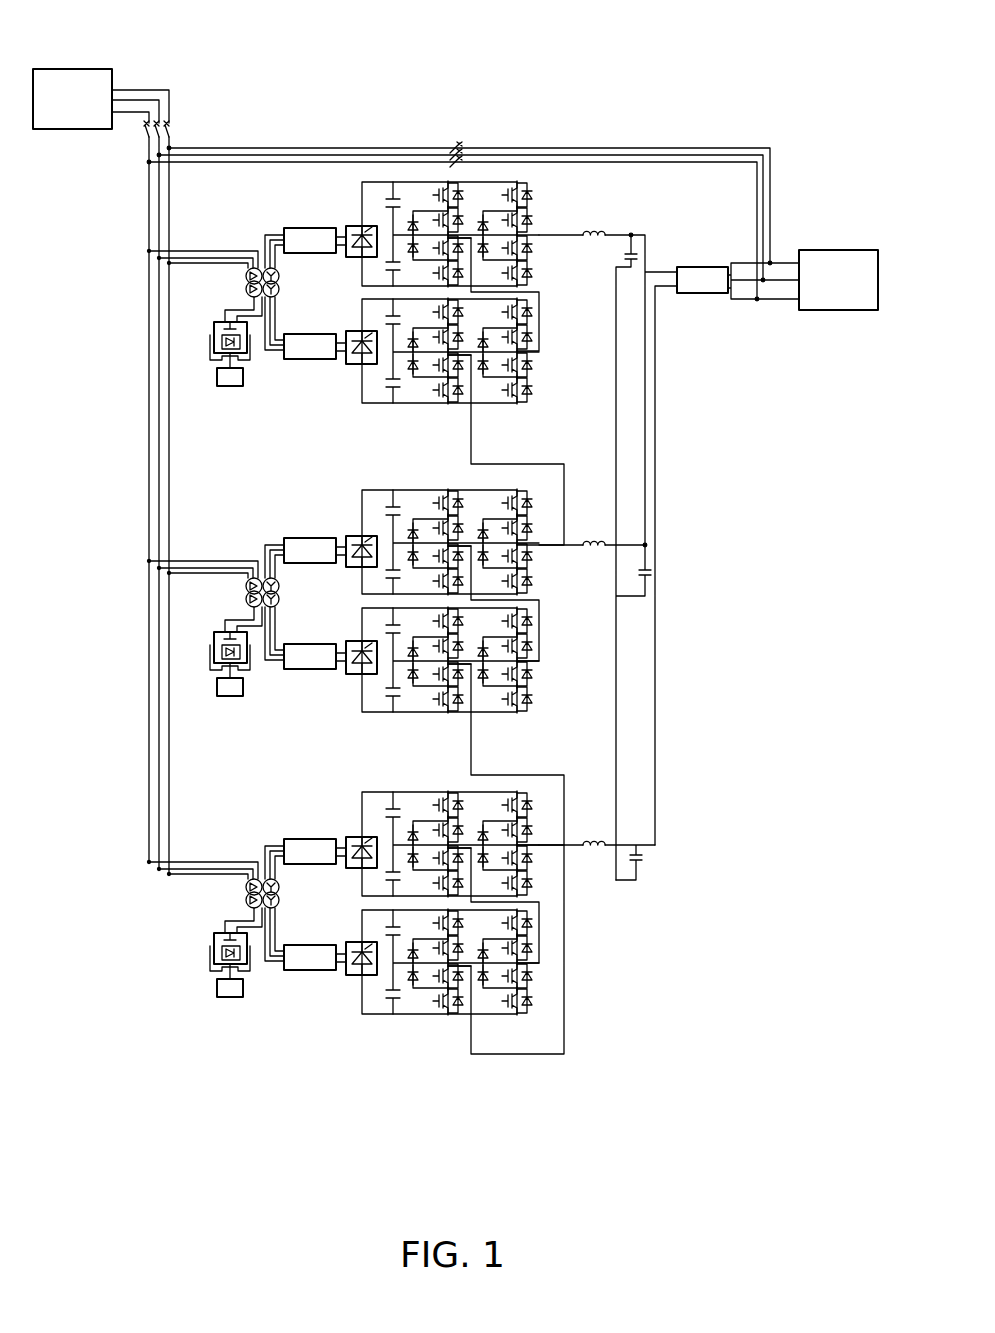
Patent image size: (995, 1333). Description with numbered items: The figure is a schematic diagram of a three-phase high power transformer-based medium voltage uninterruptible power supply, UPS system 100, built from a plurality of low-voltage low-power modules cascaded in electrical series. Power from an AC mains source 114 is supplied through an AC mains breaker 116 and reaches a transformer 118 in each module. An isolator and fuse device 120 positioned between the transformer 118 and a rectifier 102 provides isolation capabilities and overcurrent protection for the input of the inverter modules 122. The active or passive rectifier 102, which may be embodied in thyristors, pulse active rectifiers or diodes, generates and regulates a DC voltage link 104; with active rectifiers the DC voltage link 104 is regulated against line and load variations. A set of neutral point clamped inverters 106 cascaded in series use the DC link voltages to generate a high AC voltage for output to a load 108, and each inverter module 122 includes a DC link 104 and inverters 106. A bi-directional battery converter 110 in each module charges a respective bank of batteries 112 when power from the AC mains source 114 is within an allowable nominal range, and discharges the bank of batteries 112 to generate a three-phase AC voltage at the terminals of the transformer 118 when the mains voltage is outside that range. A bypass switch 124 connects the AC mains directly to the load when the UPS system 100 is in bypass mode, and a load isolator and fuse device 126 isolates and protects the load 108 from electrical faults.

The UPS system 100 is at (660, 55).
The rectifier 102 is at (352, 225).
The DC voltage link 104 is at (378, 197).
The neutral point clamped inverter 106 is at (540, 213).
The load 108 is at (838, 250).
The bi-directional battery converter 110 is at (216, 322).
The bank of batteries 112 is at (230, 386).
The AC mains source 114 is at (70, 69).
The AC mains breaker 116 is at (176, 128).
The transformer 118 is at (282, 289).
The isolator and fuse device 120 is at (300, 228).
The inverter module 122 is at (447, 1097).
The bypass switch 124 is at (455, 142).
The load isolator and fuse device 126 is at (705, 267).